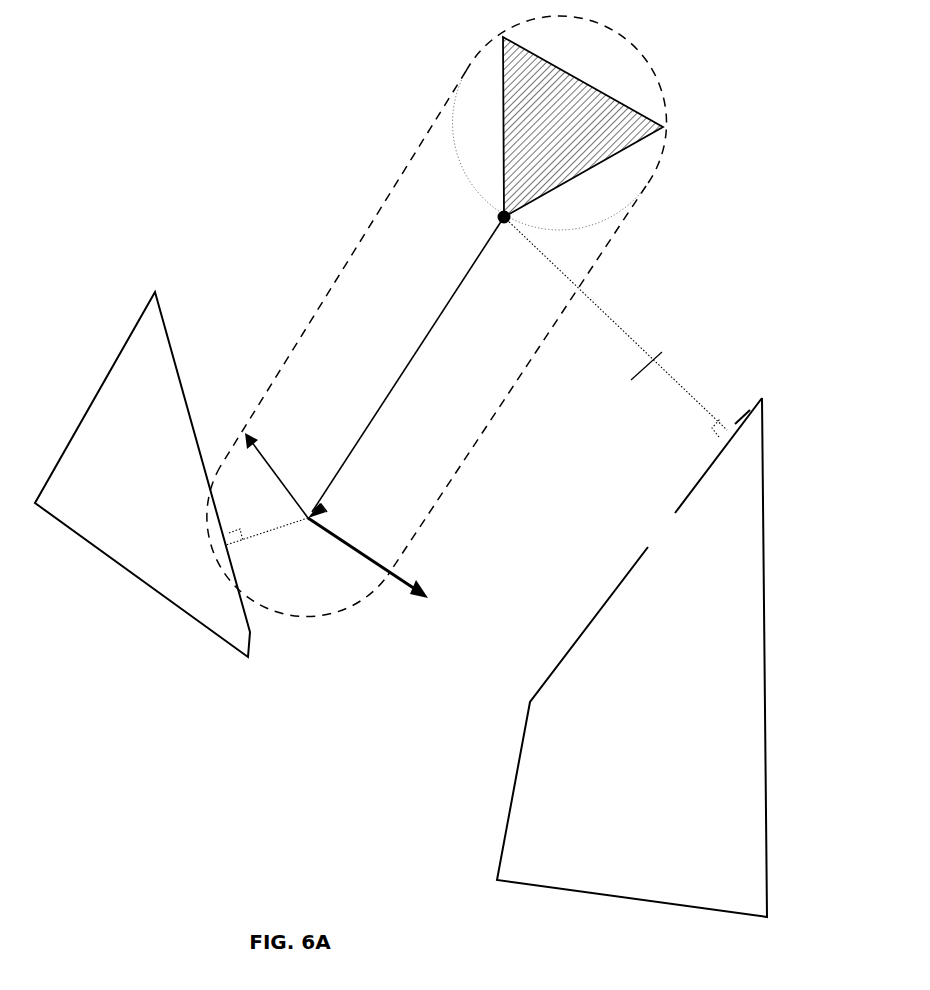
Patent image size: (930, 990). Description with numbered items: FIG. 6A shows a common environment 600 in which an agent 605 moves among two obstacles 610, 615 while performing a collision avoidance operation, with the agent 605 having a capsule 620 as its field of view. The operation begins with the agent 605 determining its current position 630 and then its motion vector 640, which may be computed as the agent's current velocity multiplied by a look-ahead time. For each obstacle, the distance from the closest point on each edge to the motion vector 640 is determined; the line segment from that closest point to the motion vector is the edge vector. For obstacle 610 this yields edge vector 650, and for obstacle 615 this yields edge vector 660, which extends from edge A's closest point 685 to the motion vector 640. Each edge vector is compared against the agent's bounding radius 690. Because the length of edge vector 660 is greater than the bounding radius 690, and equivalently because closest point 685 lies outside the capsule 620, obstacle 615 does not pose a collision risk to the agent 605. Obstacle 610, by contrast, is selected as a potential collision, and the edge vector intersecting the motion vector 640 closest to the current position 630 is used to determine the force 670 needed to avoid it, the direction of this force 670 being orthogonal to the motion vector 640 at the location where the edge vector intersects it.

The common environment 600 is at (200, 80).
The agent 605 is at (583, 127).
The obstacle 610 is at (142, 474).
The obstacle 615 is at (632, 657).
The capsule field of view 620 is at (605, 249).
The current position 630 is at (500, 213).
The motion vector 640 is at (436, 330).
The edge vector 650 is at (260, 535).
The edge vector 660 is at (644, 372).
The force 670 is at (367, 551).
The closest point 685 is at (731, 425).
The bounding radius 690 is at (252, 468).